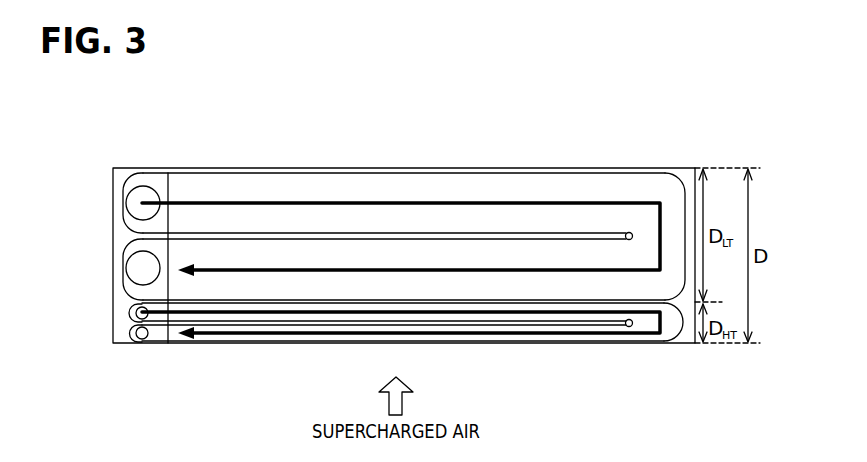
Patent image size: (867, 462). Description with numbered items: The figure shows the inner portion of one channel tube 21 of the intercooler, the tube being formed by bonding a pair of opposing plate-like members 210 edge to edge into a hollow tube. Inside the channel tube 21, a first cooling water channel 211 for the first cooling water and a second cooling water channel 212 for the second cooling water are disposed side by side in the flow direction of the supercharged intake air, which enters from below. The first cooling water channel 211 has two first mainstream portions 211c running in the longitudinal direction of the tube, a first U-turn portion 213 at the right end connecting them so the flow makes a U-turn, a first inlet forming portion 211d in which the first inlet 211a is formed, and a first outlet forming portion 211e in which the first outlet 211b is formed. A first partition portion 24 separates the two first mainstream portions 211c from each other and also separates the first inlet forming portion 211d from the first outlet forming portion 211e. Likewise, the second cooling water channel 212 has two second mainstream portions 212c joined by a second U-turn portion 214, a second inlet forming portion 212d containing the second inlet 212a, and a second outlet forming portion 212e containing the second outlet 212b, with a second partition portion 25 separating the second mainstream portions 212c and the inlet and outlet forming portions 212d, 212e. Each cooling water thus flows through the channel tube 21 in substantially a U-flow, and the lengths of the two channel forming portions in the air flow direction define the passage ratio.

The channel tube 21 is at (589, 165).
The plate-like member 210 is at (430, 167).
The first cooling water channel 211 is at (278, 188).
The first inlet 211a is at (132, 185).
The first outlet 211b is at (130, 257).
The first mainstream portion 211c is at (348, 188).
The first inlet forming portion 211d is at (155, 183).
The first outlet forming portion 211e is at (130, 290).
The first U-turn portion 213 is at (672, 222).
The first partition portion 24 is at (503, 233).
The second cooling water channel 212 is at (280, 343).
The second inlet 212a is at (130, 312).
The second outlet 212b is at (131, 340).
The second mainstream portion 212c is at (505, 338).
The second inlet forming portion 212d is at (158, 318).
The second outlet forming portion 212e is at (123, 332).
The second U-turn portion 214 is at (672, 323).
The second partition portion 25 is at (577, 326).